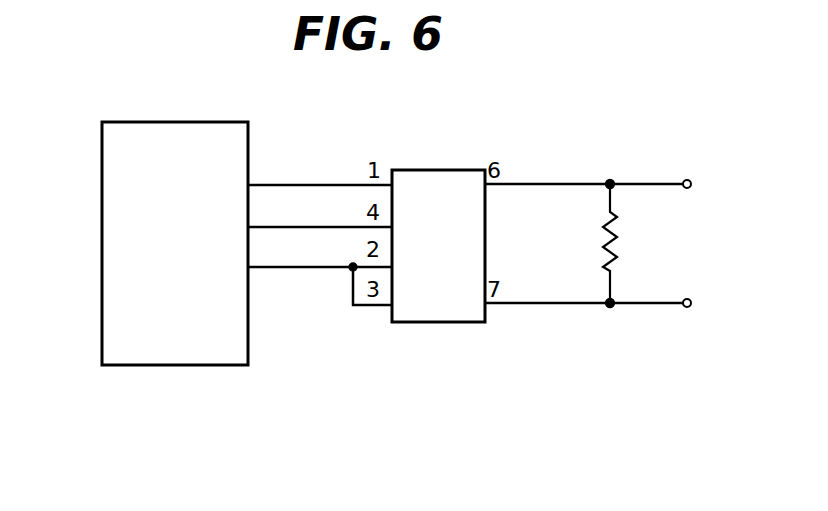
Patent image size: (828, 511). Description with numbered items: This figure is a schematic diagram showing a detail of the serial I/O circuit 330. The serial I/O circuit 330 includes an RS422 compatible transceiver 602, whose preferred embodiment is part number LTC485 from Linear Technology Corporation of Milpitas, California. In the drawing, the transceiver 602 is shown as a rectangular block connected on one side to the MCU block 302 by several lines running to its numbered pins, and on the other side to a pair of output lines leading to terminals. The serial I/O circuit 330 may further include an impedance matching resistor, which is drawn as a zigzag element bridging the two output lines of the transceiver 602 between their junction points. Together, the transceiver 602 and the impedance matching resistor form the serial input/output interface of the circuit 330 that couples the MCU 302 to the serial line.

The microcontroller unit (MCU) 302 is at (249, 137).
The RS422 compatible transceiver 602 is at (450, 170).
The serial I/O circuit 330 is at (579, 154).